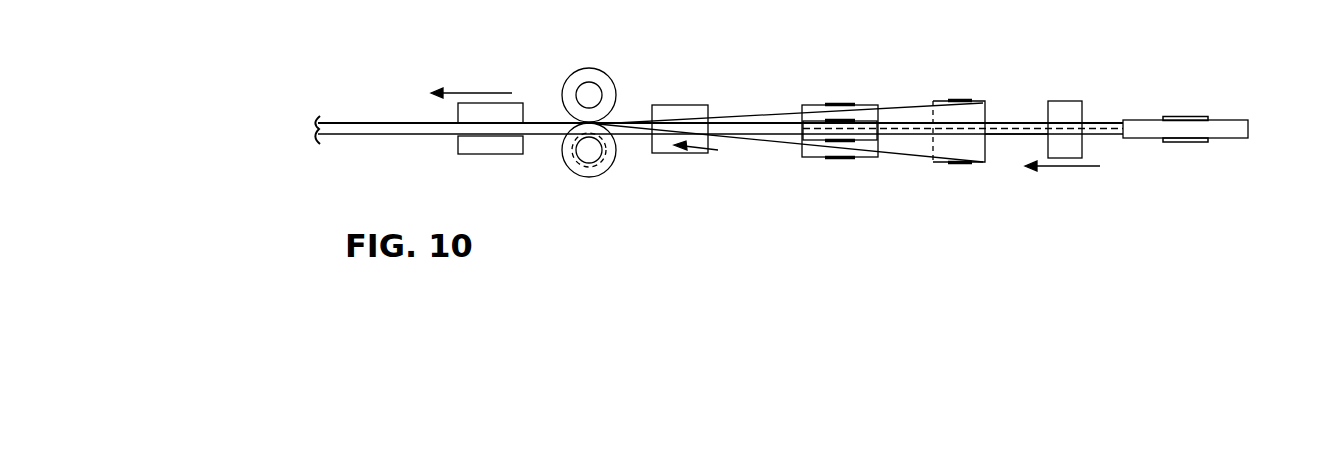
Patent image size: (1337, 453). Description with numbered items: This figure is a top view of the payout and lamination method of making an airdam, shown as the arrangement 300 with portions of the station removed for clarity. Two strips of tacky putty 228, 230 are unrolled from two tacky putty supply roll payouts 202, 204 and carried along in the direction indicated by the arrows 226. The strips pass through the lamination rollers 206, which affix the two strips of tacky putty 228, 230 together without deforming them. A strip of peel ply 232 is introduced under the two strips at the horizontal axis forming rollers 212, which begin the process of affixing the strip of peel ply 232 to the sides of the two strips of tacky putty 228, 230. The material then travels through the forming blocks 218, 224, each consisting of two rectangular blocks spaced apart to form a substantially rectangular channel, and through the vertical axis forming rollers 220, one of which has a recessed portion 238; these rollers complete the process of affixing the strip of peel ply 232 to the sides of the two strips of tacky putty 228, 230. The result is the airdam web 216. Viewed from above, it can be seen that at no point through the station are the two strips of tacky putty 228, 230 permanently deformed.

The manufacturing system 300 is at (374, 49).
The tacky putty supply roll payout 202 is at (1217, 118).
The tacky putty supply roll payout 204 is at (1217, 118).
The lamination rollers 206 is at (1057, 100).
The horizontal axis forming rollers 212 is at (861, 166).
The airdam web 216 is at (742, 150).
The forming block 218 is at (660, 155).
The vertical axis forming rollers 220 is at (560, 159).
The forming block 224 is at (487, 155).
The arrows 226 is at (490, 92).
The strip of tacky putty 228 is at (1013, 128).
The strip of tacky putty 230 is at (1013, 128).
The strip of peel ply 232 is at (900, 148).
The recessed portion 238 is at (600, 140).